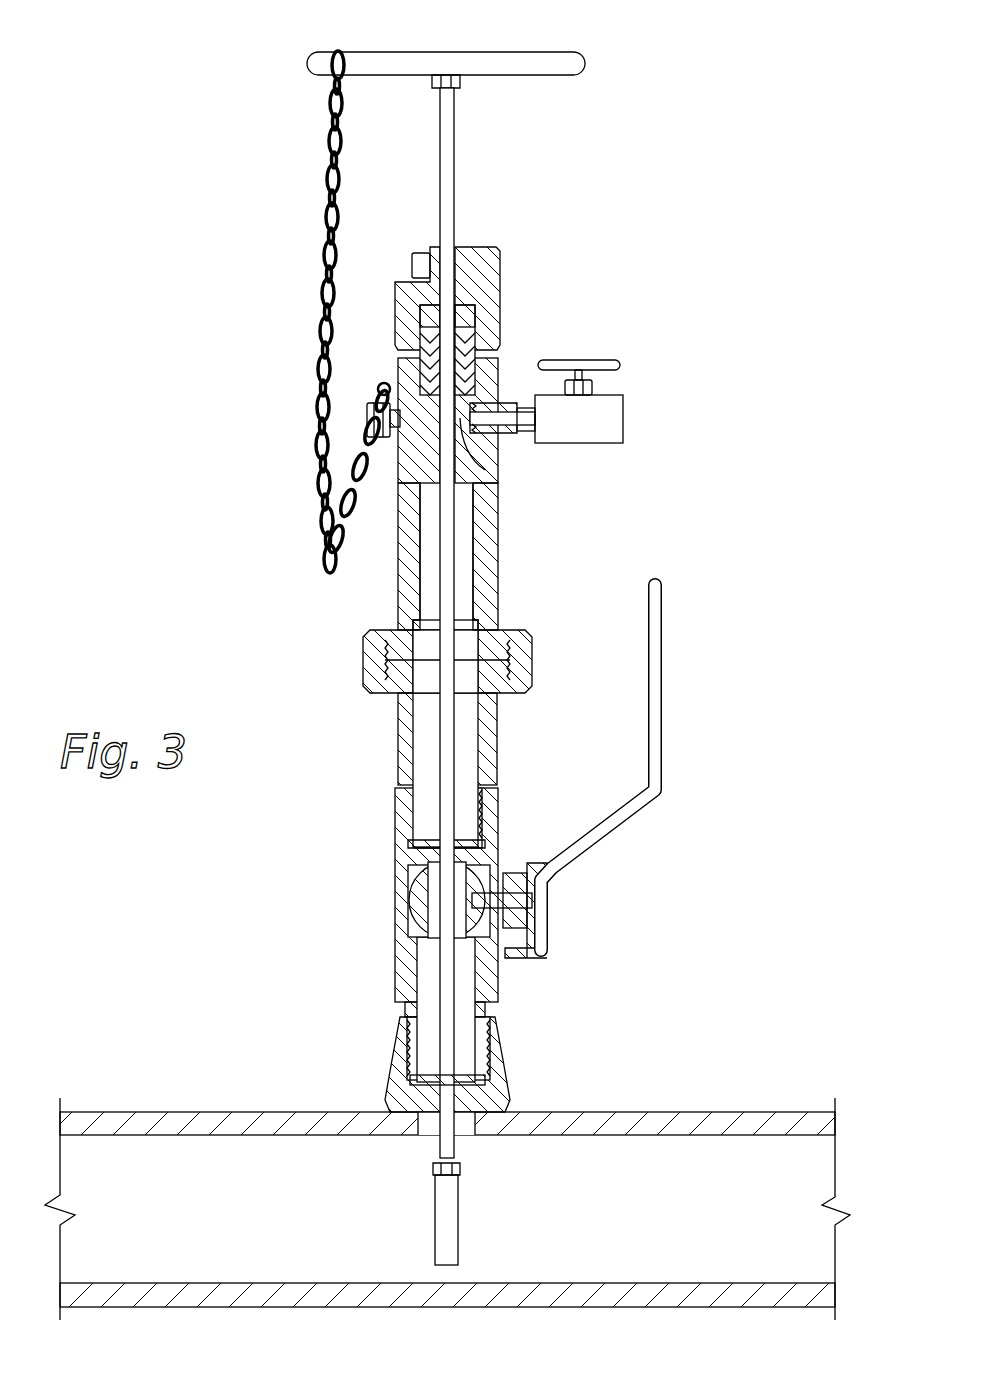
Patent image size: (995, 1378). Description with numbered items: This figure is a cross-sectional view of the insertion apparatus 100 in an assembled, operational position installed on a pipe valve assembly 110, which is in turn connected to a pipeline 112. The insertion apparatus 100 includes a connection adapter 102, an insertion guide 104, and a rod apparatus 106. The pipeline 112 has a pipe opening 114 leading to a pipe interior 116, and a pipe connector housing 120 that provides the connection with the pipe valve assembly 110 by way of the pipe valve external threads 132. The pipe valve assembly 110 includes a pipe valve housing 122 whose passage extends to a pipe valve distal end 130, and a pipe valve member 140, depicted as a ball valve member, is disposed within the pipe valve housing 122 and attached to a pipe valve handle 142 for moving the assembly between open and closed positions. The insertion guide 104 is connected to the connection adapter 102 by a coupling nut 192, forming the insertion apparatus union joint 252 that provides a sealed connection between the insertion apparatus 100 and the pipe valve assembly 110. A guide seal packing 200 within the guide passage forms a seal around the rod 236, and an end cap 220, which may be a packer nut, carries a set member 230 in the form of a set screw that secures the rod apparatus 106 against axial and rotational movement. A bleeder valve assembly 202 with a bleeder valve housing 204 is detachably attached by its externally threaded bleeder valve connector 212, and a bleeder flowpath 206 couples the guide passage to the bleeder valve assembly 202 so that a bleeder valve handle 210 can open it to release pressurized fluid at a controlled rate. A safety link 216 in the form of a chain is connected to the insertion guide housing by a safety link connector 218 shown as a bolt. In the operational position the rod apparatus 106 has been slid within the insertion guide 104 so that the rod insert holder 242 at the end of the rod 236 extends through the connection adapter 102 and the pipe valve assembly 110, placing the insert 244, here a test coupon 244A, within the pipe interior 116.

The insertion apparatus 100 is at (130, 70).
The connection adapter 102 is at (358, 745).
The insertion guide 104 is at (338, 605).
The rod apparatus 106 is at (300, 45).
The pipe valve assembly 110 is at (358, 858).
The pipeline 112 is at (146, 1110).
The pipe opening 114 is at (425, 1158).
The pipe interior 116 is at (737, 1215).
The pipe connector housing 120 is at (502, 1085).
The pipe valve housing 122 is at (500, 995).
The pipe valve distal end 130 is at (508, 806).
The pipe valve external threads 132 is at (405, 1020).
The pipe valve member 140 is at (413, 905).
The pipe valve handle 142 is at (600, 840).
The coupling nut 192 is at (535, 650).
The guide seal packing 200 is at (477, 345).
The bleeder valve assembly 202 is at (640, 404).
The bleeder valve housing 204 is at (600, 443).
The bleeder flowpath 206 is at (480, 462).
The bleeder valve handle 210 is at (605, 358).
The bleeder valve connector 212 is at (490, 402).
The safety link 216 is at (322, 214).
The safety link connector 218 is at (377, 440).
The end cap 220 is at (502, 270).
The set member 230 is at (420, 250).
The rod 236 is at (456, 150).
The rod insert holder 242 is at (462, 1167).
The insert 244 is at (430, 1225).
The test coupon 244A is at (460, 1245).
The insertion apparatus union joint 252 is at (335, 684).